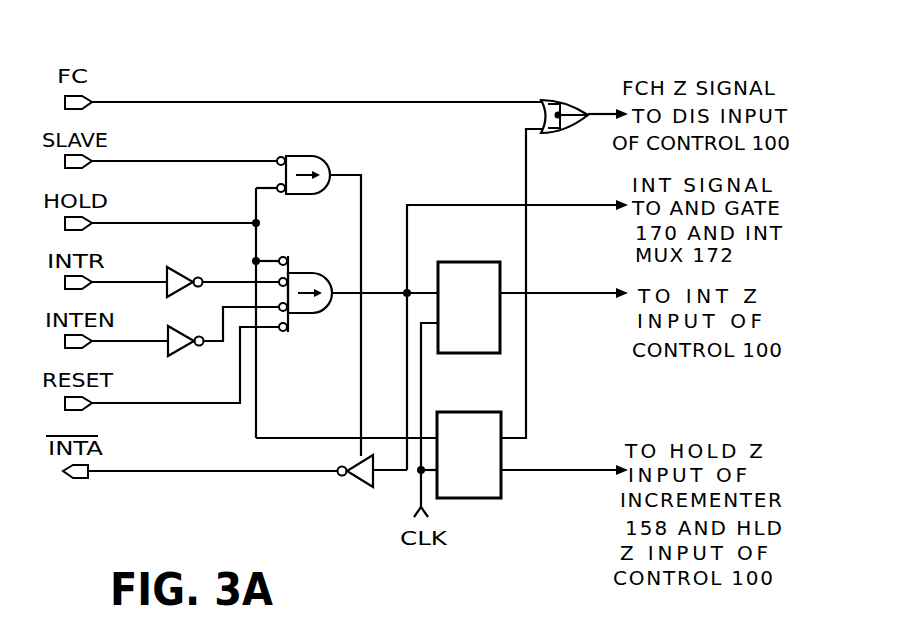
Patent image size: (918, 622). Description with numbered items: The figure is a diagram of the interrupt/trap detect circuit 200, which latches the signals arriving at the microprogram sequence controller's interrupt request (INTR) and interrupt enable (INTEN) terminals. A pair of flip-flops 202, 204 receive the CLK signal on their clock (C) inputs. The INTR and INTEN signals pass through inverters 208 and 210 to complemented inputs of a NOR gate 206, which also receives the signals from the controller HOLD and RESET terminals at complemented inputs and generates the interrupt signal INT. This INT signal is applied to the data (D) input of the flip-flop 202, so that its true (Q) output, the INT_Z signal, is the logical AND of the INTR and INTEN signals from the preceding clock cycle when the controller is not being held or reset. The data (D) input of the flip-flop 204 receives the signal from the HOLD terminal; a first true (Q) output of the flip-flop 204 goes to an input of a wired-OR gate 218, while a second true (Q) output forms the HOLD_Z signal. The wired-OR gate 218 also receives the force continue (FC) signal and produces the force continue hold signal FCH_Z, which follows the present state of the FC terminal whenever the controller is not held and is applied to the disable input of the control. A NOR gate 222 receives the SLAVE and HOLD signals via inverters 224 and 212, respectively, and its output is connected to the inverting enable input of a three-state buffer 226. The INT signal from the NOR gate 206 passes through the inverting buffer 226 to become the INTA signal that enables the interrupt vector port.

The interrupt/trap detect circuit 200 is at (438, 93).
The flip-flop 202 is at (462, 262).
The flip-flop 204 is at (458, 412).
The NOR gate 206 is at (303, 273).
The inverter 208 is at (167, 267).
The inverter 210 is at (189, 357).
The inverter 212 is at (281, 193).
The wired-OR gate 218 is at (544, 100).
The NOR gate 222 is at (328, 157).
The inverter 224 is at (278, 157).
The three-state buffer 226 is at (357, 478).